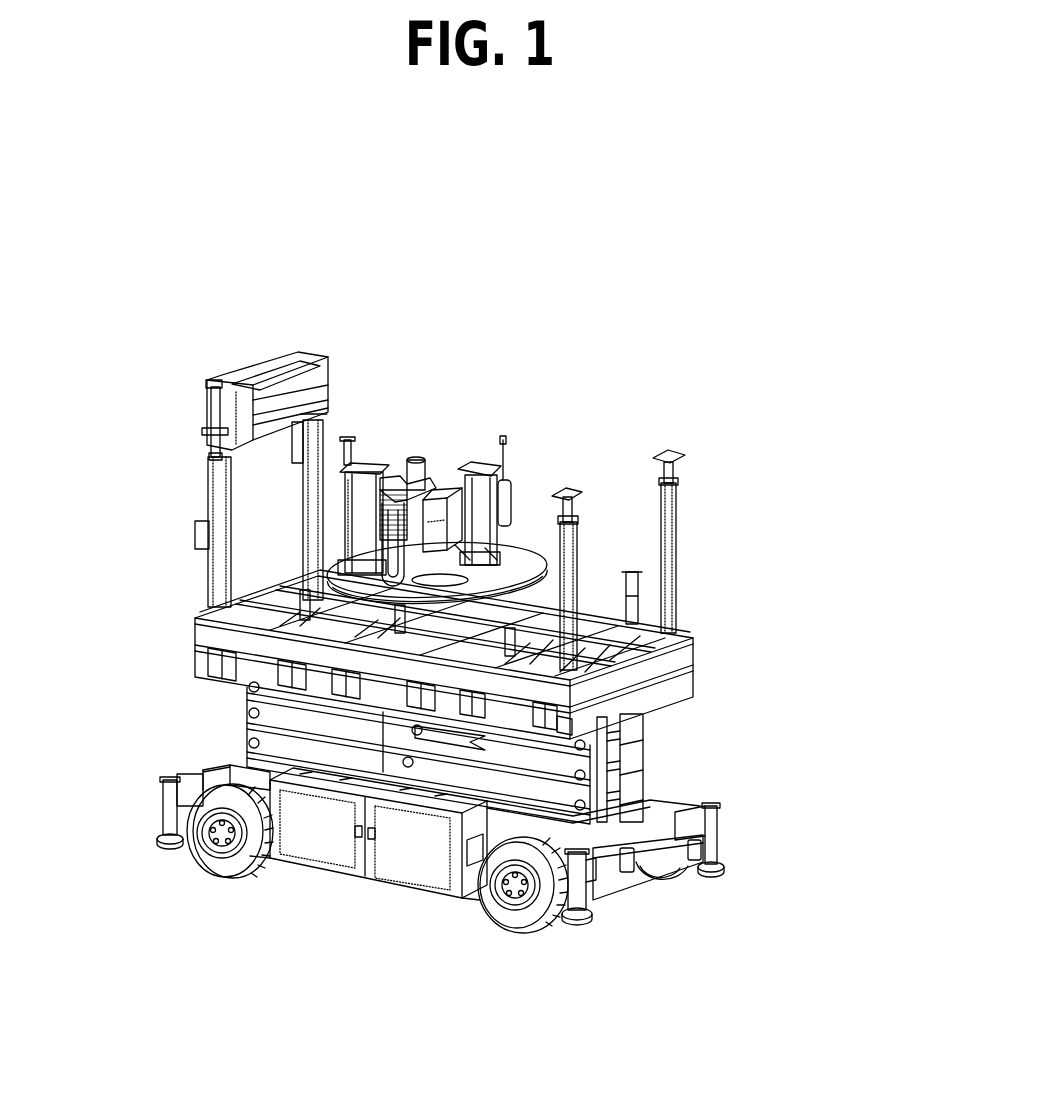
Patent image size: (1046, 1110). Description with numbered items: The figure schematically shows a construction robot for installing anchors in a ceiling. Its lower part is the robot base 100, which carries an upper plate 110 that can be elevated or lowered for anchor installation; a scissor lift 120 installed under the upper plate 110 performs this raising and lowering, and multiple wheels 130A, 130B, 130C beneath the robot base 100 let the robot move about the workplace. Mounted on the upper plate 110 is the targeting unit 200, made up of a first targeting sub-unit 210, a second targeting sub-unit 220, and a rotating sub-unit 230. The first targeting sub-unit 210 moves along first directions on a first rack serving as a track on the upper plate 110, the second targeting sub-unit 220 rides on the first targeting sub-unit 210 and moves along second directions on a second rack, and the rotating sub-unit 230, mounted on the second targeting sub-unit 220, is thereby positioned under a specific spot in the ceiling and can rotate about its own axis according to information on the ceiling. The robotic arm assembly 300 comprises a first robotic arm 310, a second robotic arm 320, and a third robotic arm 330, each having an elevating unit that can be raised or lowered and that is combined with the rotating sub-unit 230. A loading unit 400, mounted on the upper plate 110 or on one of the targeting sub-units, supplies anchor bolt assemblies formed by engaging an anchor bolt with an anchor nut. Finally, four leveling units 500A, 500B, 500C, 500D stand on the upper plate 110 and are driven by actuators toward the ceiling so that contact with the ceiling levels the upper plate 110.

The robot base 100 is at (877, 680).
The upper plate 110 is at (680, 682).
The scissor lift 120 is at (628, 758).
The wheel 130A is at (660, 808).
The wheel 130B is at (535, 928).
The wheel 130C is at (235, 880).
The targeting unit 200 is at (795, 338).
The first targeting sub-unit 210 is at (557, 573).
The second targeting sub-unit 220 is at (492, 562).
The rotating sub-unit 230 is at (445, 578).
The robotic arm assembly 300 is at (492, 253).
The first robotic arm 310 is at (400, 470).
The second robotic arm 320 is at (477, 462).
The third robotic arm 330 is at (368, 450).
The loading unit 400 is at (245, 365).
The leveling unit 500A is at (207, 484).
The leveling unit 500B is at (580, 585).
The leveling unit 500C is at (676, 595).
The leveling unit 500D is at (348, 445).